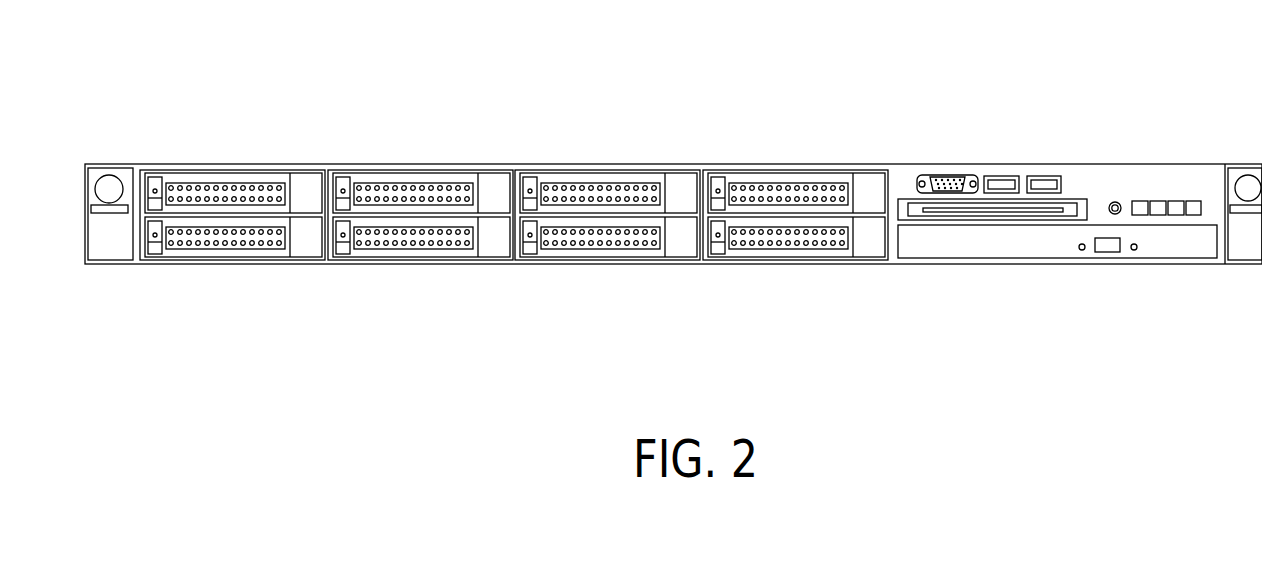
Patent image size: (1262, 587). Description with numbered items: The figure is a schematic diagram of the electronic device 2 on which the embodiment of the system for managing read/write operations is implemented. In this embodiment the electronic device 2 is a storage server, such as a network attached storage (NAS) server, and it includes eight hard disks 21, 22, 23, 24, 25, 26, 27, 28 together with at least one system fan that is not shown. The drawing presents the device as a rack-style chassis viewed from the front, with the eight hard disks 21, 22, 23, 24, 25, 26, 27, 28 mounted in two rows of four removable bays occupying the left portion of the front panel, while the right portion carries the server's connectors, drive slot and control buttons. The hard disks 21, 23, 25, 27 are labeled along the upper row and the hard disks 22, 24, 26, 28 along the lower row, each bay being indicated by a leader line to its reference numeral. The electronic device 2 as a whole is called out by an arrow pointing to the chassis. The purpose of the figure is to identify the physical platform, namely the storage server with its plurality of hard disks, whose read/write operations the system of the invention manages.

The electronic device 2 is at (934, 140).
The hard disk 21 is at (211, 187).
The hard disk 22 is at (207, 243).
The hard disk 23 is at (400, 187).
The hard disk 24 is at (396, 243).
The hard disk 25 is at (583, 187).
The hard disk 26 is at (582, 243).
The hard disk 27 is at (768, 187).
The hard disk 28 is at (768, 243).